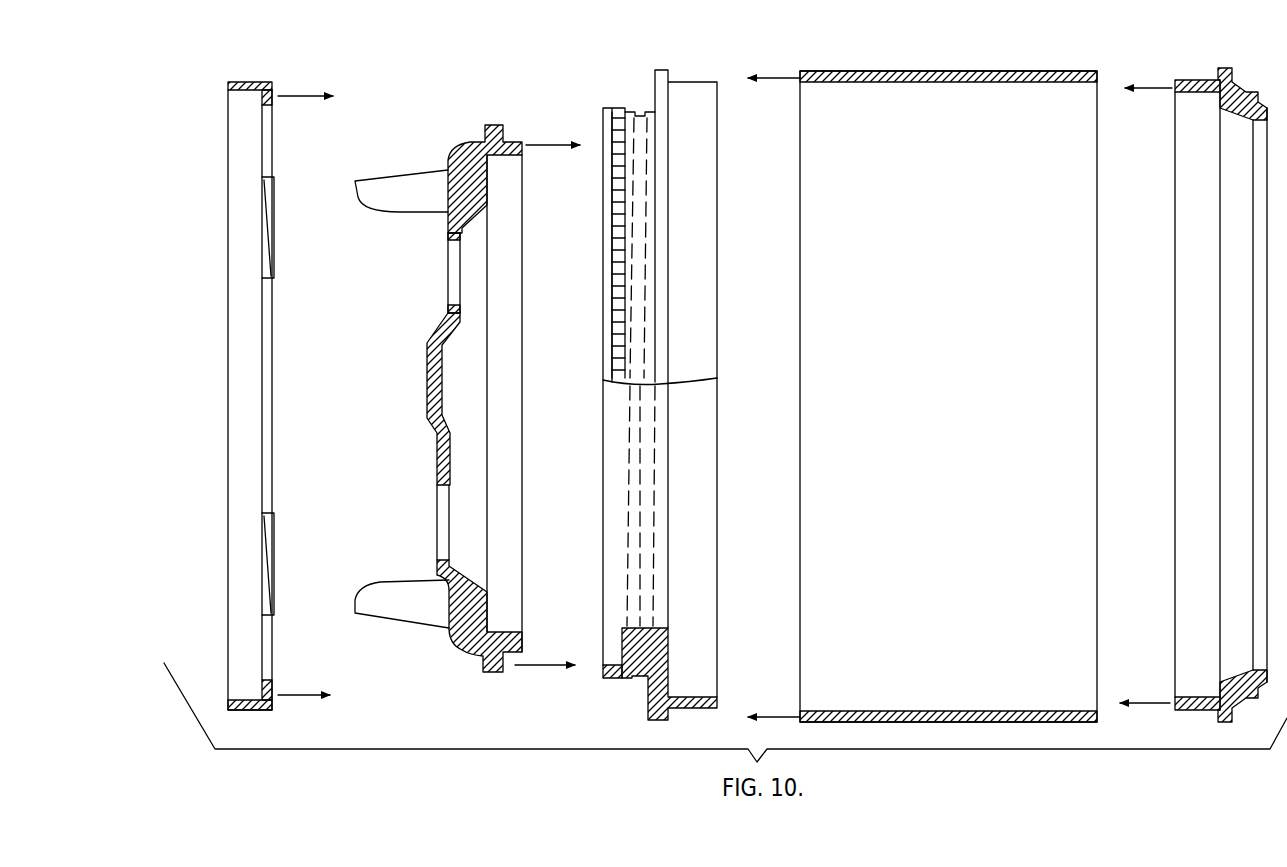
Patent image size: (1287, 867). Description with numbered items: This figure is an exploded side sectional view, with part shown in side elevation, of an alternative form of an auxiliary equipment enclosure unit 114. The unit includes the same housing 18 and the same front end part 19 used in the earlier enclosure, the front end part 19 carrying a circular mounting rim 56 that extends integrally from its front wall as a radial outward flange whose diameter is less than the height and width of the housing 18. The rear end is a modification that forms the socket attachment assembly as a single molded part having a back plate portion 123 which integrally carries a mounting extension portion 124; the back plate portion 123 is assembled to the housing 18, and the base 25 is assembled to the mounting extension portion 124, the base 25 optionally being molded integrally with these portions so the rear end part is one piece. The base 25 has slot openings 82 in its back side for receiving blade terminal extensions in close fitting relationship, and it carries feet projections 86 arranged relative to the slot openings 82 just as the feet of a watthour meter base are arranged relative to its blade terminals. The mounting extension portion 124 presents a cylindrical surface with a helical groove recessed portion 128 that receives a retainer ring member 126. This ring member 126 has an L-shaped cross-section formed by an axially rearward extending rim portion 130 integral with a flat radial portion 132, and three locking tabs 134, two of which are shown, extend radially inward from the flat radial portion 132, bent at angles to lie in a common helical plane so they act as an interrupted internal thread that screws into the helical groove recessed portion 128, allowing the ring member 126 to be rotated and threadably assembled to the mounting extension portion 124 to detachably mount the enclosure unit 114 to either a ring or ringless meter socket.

The housing 18 is at (948, 408).
The front end part 19 is at (1200, 714).
The base 25 is at (438, 398).
The circular mounting rim 56 is at (1228, 68).
The slot openings 82 is at (448, 244).
The feet projections 86 is at (410, 185).
The auxiliary equipment enclosure unit 114 is at (1005, 744).
The back plate portion 123 is at (673, 690).
The mounting extension portion 124 is at (640, 681).
The retainer ring member 126 is at (250, 379).
The helical groove recessed portion 128 is at (618, 114).
The axially rearward extending rim portion 130 is at (248, 88).
The flat radial portion 132 is at (258, 97).
The locking tabs 134 is at (270, 237).